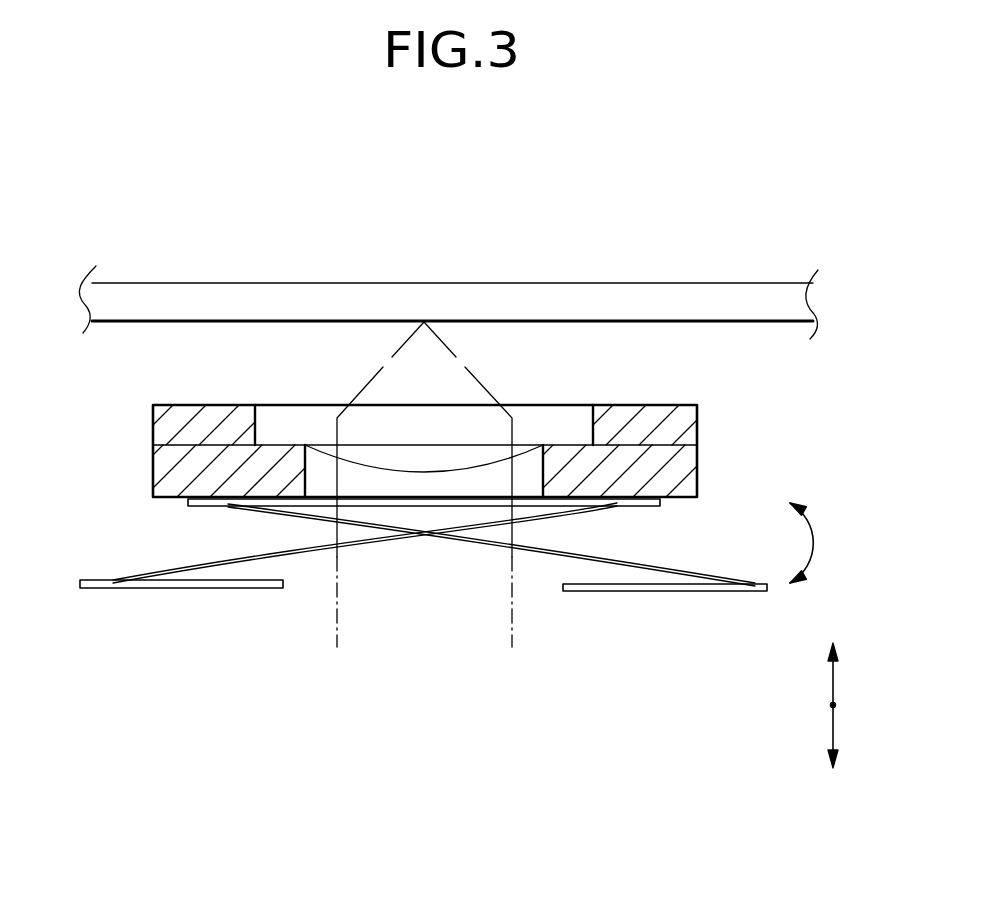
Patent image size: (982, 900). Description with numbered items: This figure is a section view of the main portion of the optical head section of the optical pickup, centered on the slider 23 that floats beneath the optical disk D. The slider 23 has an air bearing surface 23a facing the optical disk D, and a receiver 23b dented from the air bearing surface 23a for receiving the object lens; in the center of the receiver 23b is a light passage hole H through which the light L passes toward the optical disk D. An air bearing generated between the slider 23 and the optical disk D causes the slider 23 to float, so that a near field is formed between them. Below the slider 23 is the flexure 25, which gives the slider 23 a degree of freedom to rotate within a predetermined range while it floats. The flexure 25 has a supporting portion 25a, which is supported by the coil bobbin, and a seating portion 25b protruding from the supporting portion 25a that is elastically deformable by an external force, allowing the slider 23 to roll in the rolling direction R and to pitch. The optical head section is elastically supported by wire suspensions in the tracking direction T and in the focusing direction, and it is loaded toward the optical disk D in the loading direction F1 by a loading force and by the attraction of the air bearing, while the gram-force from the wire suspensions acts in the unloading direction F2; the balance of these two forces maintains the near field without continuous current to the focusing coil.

The optical disk D is at (708, 283).
The slider 23 is at (353, 432).
The air bearing surface 23a is at (196, 404).
The receiver 23b is at (287, 444).
The light passage hole H is at (305, 478).
The light L is at (512, 620).
The flexure 25 is at (423, 619).
The supporting portion 25a is at (202, 693).
The seating portion 25b is at (205, 500).
The rolling direction R is at (813, 543).
The tracking direction T is at (833, 705).
The loading direction F1 is at (848, 661).
The unloading direction F2 is at (849, 739).